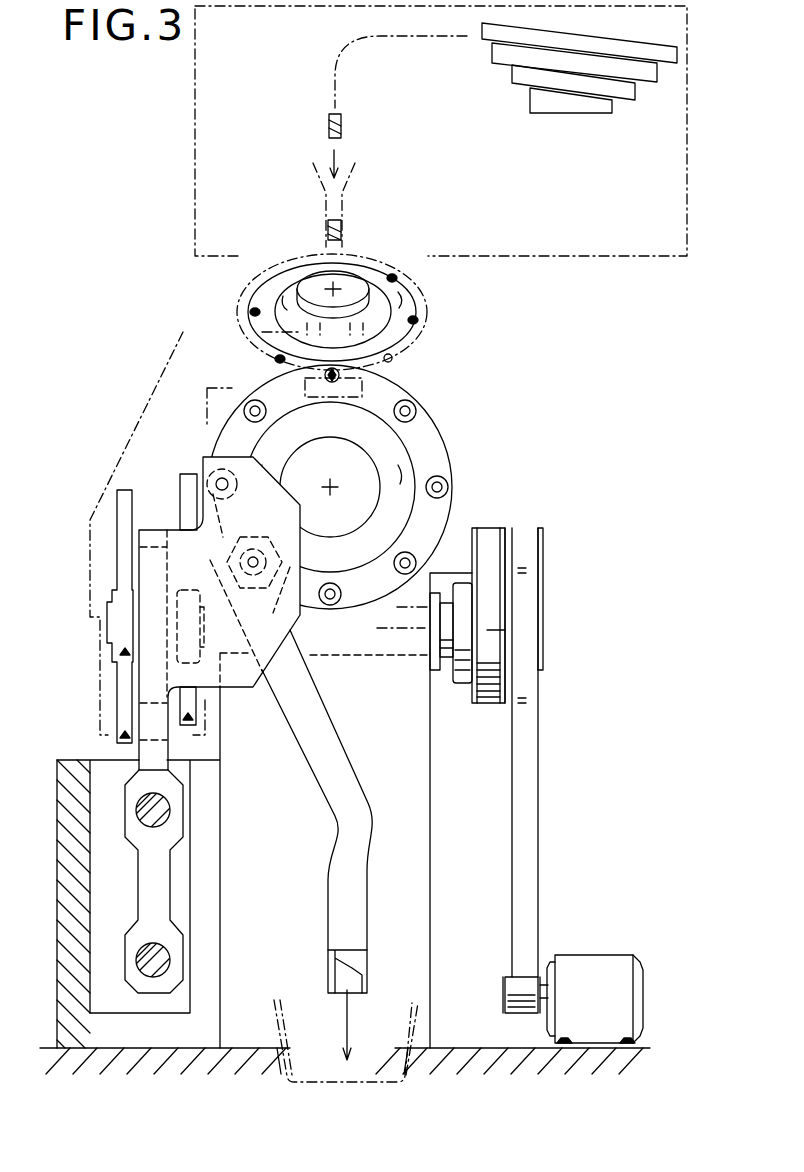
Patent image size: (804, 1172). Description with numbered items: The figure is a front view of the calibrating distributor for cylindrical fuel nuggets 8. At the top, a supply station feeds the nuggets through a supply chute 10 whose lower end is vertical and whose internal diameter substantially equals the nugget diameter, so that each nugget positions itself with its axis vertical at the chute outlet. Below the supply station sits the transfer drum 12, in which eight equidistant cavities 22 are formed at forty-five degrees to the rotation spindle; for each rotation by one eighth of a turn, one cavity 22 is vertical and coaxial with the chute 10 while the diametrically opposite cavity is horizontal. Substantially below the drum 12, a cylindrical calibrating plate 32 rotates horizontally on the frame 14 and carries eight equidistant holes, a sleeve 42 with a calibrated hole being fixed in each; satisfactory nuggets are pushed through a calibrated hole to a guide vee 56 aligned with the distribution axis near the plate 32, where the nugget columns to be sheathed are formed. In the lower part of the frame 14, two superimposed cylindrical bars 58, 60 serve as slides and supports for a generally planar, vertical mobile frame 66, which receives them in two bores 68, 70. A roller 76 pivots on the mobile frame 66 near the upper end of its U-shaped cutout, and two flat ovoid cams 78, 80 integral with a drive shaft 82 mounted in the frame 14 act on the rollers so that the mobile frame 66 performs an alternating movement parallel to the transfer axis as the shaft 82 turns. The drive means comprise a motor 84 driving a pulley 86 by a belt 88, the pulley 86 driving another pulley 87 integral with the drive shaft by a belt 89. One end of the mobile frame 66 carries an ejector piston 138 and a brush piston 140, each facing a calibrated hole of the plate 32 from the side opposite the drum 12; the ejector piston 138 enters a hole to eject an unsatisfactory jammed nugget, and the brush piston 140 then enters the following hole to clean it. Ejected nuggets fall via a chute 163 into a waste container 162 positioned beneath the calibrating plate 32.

The fuel nuggets 8 is at (328, 124).
The supply chute 10 is at (326, 192).
The transfer drum 12 is at (258, 303).
The frame 14 is at (72, 748).
The cavities 22 is at (422, 313).
The calibrating plate 32 is at (440, 462).
The sleeve 42 is at (414, 410).
The guide vee 56 is at (374, 394).
The cylindrical bar 58 is at (168, 823).
The cylindrical bar 60 is at (166, 970).
The mobile frame 66 is at (190, 893).
The bore 68 is at (162, 803).
The bore 70 is at (170, 958).
The roller 76 is at (169, 591).
The ovoid cam 78 is at (122, 490).
The ovoid cam 80 is at (220, 476).
The drive shaft 82 is at (380, 660).
The motor 84 is at (572, 955).
The pulley 86 is at (545, 626).
The pulley 87 is at (470, 702).
The belt 88 is at (522, 562).
The belt 89 is at (486, 542).
The ejector piston 138 is at (288, 559).
The brush piston 140 is at (218, 386).
The waste container 162 is at (305, 1084).
The chute 163 is at (367, 903).